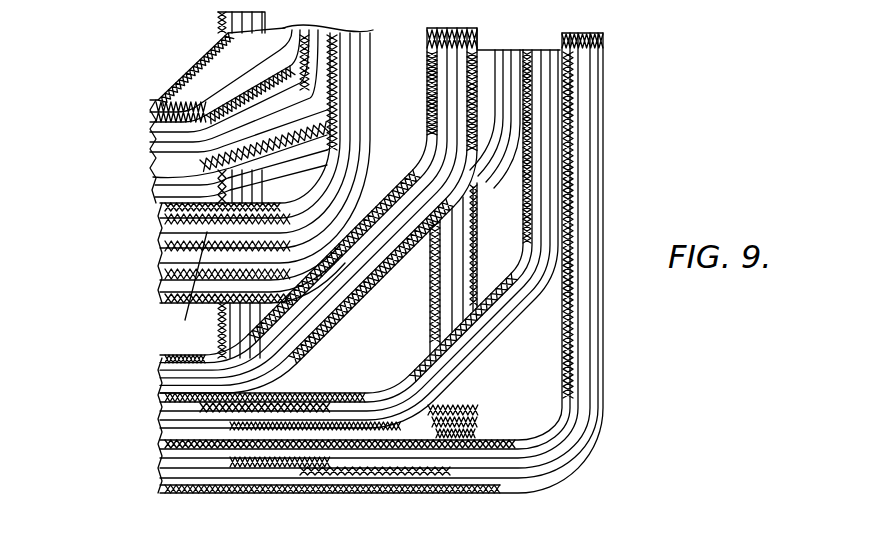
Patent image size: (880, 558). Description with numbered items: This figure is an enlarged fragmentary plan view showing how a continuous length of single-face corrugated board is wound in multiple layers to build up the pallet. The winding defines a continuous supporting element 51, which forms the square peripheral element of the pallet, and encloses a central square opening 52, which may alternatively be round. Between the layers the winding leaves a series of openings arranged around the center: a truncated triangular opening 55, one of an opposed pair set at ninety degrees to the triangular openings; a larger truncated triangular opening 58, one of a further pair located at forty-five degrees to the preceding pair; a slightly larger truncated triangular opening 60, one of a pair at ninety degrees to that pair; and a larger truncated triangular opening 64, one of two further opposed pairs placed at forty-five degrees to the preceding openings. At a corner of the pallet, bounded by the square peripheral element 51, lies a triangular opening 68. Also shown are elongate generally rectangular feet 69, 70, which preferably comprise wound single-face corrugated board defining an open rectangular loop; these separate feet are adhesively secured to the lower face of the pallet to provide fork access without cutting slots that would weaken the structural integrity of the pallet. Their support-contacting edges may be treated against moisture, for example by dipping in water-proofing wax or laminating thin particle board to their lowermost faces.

The continuous supporting element 51 is at (409, 263).
The central square opening 52 is at (193, 83).
The truncated triangular opening 55 is at (313, 171).
The larger truncated triangular opening 58 is at (411, 99).
The slightly larger truncated triangular opening 60 is at (160, 247).
The larger truncated triangular opening 64 is at (365, 381).
The triangular opening 68 is at (545, 380).
The elongate generally rectangular foot 69 is at (437, 281).
The elongate generally rectangular foot 70 is at (233, 331).